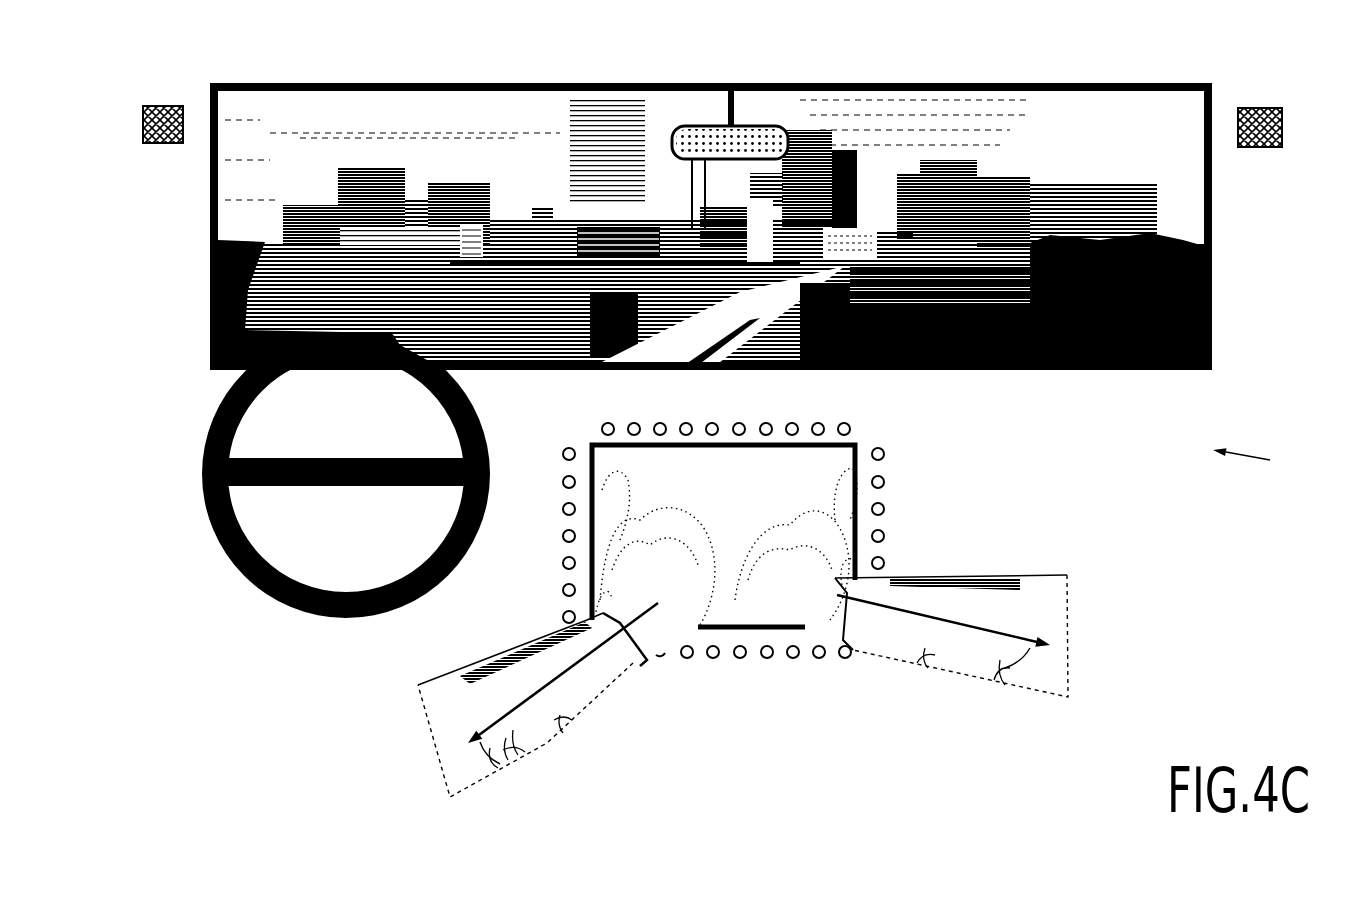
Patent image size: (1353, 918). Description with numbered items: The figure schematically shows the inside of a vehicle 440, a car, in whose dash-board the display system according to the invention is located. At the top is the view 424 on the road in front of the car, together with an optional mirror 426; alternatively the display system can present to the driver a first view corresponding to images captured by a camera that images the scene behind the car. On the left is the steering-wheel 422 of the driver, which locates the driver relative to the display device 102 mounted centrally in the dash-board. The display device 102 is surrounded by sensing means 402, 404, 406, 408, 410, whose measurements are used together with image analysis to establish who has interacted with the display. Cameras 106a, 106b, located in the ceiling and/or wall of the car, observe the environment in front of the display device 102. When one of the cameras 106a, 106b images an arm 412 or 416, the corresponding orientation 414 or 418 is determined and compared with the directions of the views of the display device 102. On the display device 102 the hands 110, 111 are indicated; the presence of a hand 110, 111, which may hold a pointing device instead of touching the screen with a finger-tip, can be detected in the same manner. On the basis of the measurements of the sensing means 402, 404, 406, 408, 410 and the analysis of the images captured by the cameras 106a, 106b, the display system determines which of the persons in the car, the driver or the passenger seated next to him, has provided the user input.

The view 424 is at (423, 100).
The mirror 426 is at (765, 126).
The camera 106a is at (160, 105).
The camera 106b is at (1270, 107).
The steering-wheel 422 is at (207, 425).
The display device 102 is at (846, 458).
The sensing means 402 is at (605, 424).
The sensing means 404 is at (632, 422).
The sensing means 406 is at (882, 481).
The sensing means 408 is at (821, 655).
The sensing means 410 is at (563, 454).
The hand 110 is at (620, 558).
The hand 111 is at (826, 551).
The arm 412 is at (532, 716).
The orientation 414 is at (599, 648).
The arm 416 is at (960, 657).
The orientation 418 is at (1003, 650).
The vehicle 440 is at (1317, 474).